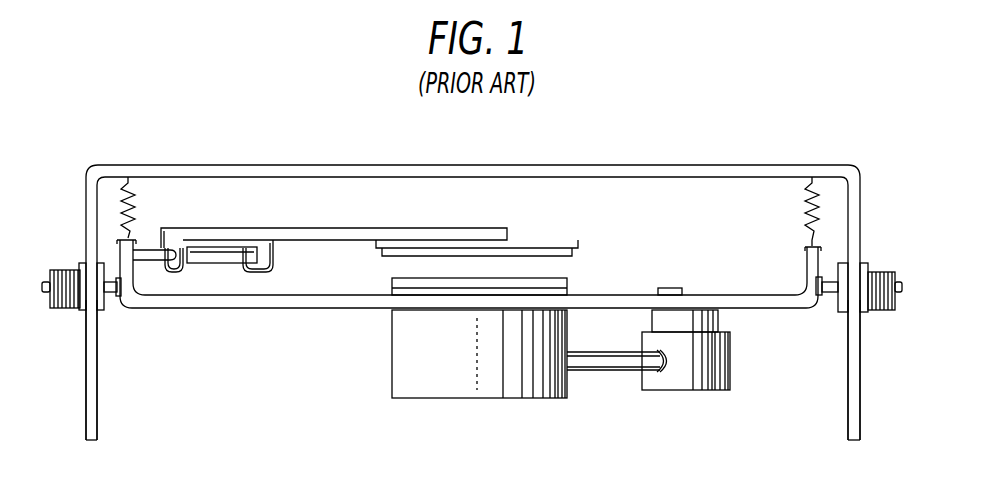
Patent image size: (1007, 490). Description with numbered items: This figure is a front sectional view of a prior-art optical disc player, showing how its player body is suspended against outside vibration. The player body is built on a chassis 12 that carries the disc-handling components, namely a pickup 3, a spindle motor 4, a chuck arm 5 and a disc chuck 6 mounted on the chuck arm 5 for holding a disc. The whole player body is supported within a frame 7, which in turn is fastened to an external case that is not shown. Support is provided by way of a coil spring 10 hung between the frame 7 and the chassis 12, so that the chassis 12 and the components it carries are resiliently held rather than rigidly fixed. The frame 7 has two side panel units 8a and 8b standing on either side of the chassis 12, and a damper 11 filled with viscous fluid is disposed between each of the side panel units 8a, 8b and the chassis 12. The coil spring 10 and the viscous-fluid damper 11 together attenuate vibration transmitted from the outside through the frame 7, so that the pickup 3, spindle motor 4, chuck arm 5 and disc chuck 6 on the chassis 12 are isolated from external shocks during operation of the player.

The pickup 3 is at (700, 440).
The spindle motor 4 is at (453, 428).
The chuck arm 5 is at (333, 228).
The disc chuck 6 is at (547, 240).
The frame 7 is at (886, 133).
The side panel unit 8a is at (115, 418).
The side panel unit 8b is at (828, 430).
The coil spring 10 is at (826, 198).
The damper 11 is at (893, 378).
The chassis 12 is at (218, 398).